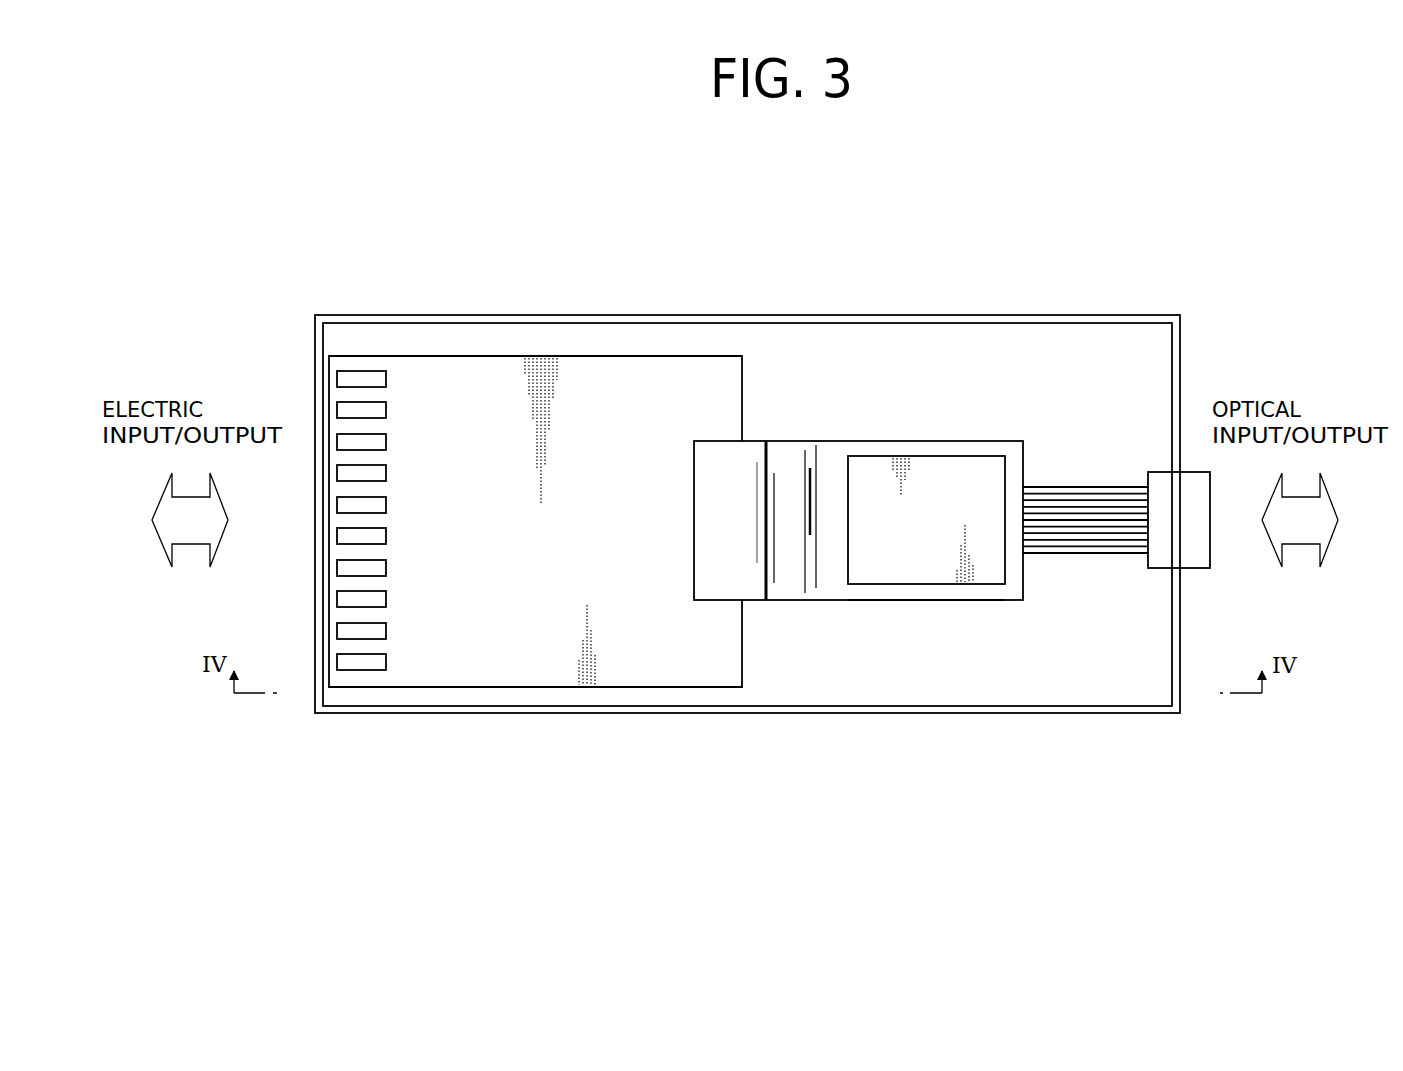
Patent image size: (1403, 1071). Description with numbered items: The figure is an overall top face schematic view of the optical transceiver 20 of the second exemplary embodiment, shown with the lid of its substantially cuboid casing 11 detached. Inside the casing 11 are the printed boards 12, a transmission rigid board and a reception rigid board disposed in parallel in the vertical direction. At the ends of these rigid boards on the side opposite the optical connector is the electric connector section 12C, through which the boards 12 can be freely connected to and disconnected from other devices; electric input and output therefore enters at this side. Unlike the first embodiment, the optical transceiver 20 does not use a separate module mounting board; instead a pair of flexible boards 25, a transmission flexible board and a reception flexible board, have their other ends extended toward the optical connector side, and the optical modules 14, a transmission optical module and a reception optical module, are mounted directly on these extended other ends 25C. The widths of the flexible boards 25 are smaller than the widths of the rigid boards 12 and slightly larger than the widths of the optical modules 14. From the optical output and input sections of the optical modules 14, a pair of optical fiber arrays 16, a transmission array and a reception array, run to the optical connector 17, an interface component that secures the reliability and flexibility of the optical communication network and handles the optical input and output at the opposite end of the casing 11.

The optical transceiver 20 is at (926, 257).
The casing 11 is at (777, 314).
The printed boards 12 is at (608, 375).
The electric connector section 12C is at (411, 338).
The flexible boards 25 is at (782, 590).
The extended other ends 25C is at (968, 590).
The optical modules 14 is at (931, 562).
The optical fiber arrays 16 is at (1058, 533).
The optical connector 17 is at (1162, 555).